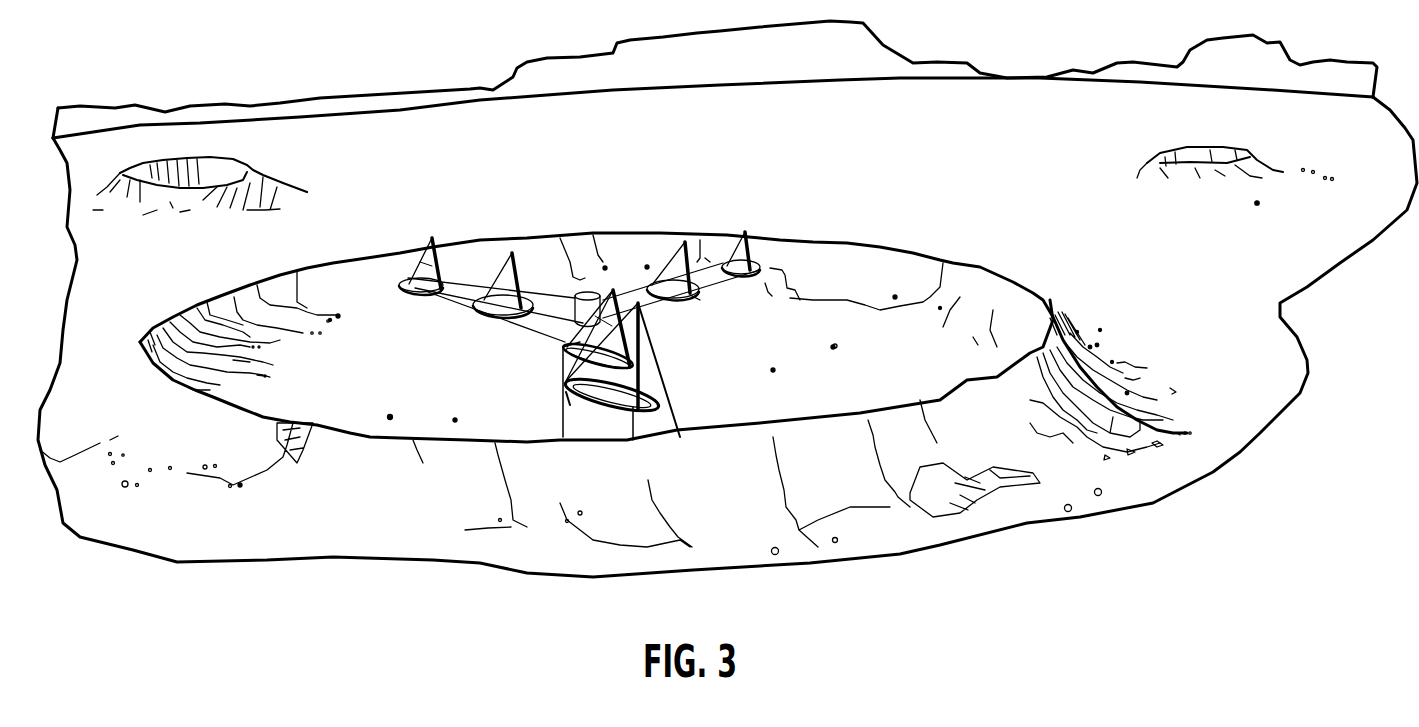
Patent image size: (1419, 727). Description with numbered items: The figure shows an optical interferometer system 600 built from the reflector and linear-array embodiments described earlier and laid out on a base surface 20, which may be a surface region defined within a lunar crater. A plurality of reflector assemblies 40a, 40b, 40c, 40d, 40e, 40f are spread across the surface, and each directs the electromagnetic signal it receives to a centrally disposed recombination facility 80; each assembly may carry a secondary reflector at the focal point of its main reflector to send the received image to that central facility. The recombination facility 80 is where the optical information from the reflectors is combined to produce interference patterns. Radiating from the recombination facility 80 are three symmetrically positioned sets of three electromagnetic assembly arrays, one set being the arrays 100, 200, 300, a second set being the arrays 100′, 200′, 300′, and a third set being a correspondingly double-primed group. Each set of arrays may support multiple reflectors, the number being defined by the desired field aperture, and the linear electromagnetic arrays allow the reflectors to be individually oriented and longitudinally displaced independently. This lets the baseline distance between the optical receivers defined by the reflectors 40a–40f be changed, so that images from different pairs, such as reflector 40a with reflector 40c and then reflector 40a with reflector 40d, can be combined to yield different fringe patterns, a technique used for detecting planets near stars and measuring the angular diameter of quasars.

The base surface 20 is at (913, 327).
The optical interferometer system 600 is at (755, 186).
The reflector assembly 40a is at (660, 397).
The reflector assembly 40b is at (640, 338).
The reflector assembly 40c is at (753, 260).
The reflector assembly 40d is at (662, 238).
The reflector assembly 40e is at (517, 290).
The reflector assembly 40f is at (438, 246).
The recombination facility 80 is at (598, 288).
The electromagnetic assembly array 100 is at (677, 420).
The electromagnetic assembly array 200 is at (565, 425).
The electromagnetic assembly array 300 is at (565, 392).
The electromagnetic assembly array 100′ is at (712, 262).
The electromagnetic assembly array 200′ is at (717, 282).
The electromagnetic assembly array 300′ is at (723, 277).